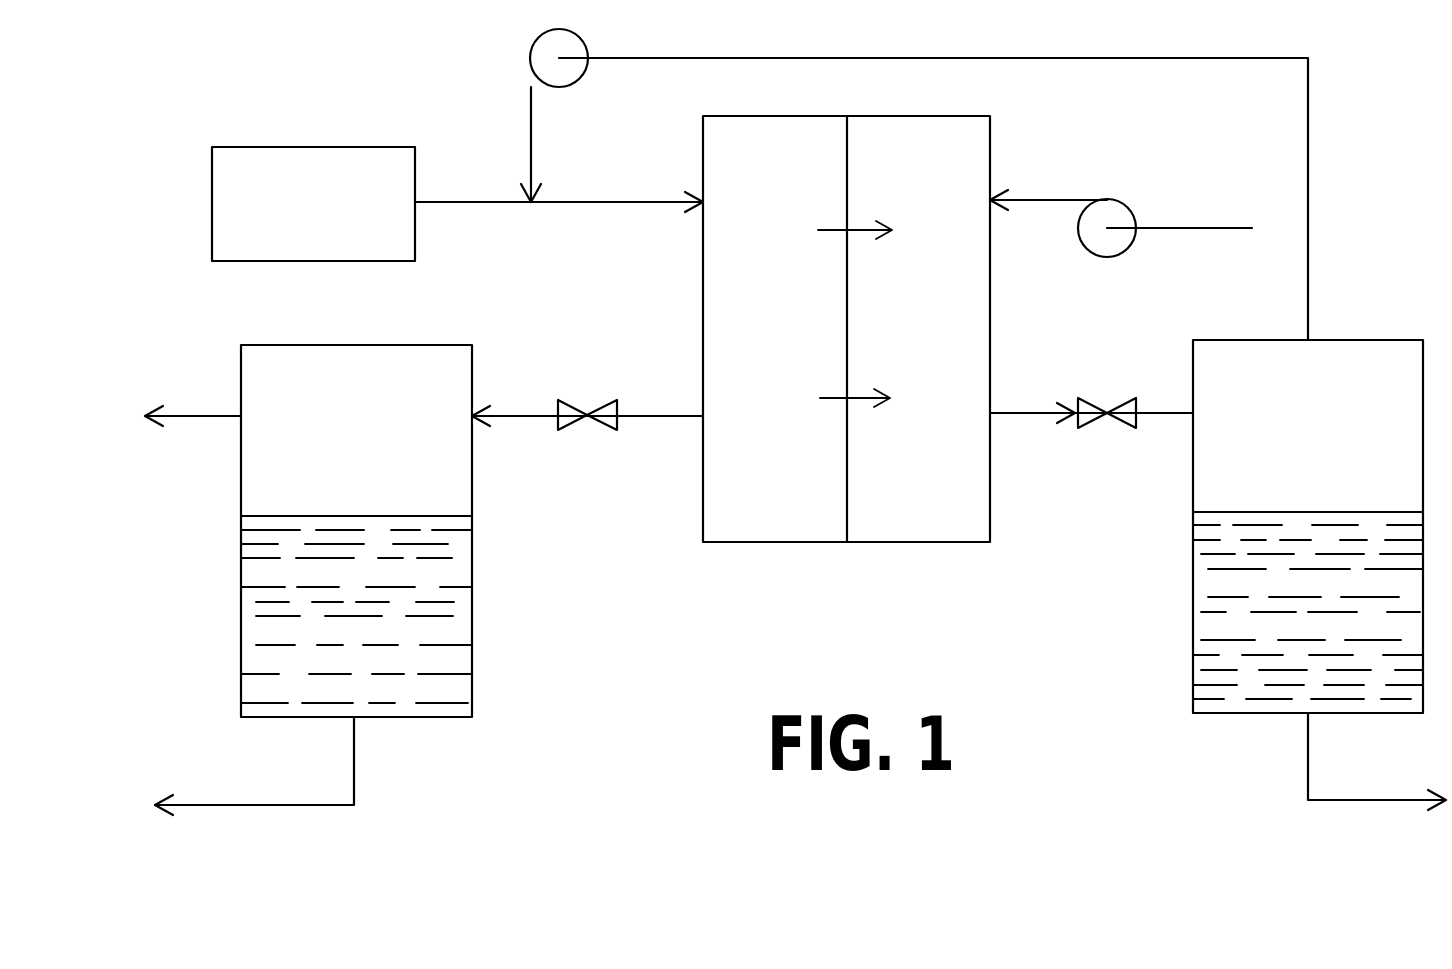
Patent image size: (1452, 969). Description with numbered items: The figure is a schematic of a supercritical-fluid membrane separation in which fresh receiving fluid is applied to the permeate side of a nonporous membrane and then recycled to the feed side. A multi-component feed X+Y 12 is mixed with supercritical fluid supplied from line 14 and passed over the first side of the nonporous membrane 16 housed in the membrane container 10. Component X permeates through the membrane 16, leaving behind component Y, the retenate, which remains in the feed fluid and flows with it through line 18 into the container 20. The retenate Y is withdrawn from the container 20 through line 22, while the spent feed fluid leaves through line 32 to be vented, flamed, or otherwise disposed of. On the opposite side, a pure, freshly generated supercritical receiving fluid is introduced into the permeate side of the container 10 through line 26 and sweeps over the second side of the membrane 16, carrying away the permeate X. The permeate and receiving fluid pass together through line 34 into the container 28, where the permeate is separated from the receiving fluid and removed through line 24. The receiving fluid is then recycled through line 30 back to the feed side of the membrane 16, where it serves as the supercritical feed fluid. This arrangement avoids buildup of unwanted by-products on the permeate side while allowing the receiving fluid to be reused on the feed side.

The membrane container 10 is at (827, 116).
The multi-component feed 12 is at (371, 147).
The supercritical fluid line 14 is at (531, 165).
The nonporous membrane 16 is at (845, 312).
The line 18 is at (518, 416).
The container 20 is at (323, 345).
The line 22 is at (295, 805).
The line 24 is at (1361, 800).
The line 26 is at (1033, 200).
The container 28 is at (1345, 340).
The line 30 is at (841, 58).
The line 32 is at (210, 416).
The line 34 is at (1030, 413).